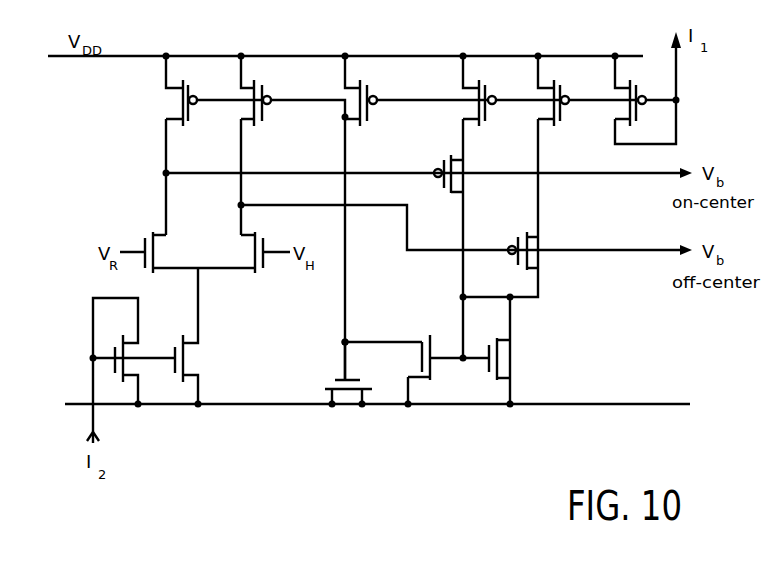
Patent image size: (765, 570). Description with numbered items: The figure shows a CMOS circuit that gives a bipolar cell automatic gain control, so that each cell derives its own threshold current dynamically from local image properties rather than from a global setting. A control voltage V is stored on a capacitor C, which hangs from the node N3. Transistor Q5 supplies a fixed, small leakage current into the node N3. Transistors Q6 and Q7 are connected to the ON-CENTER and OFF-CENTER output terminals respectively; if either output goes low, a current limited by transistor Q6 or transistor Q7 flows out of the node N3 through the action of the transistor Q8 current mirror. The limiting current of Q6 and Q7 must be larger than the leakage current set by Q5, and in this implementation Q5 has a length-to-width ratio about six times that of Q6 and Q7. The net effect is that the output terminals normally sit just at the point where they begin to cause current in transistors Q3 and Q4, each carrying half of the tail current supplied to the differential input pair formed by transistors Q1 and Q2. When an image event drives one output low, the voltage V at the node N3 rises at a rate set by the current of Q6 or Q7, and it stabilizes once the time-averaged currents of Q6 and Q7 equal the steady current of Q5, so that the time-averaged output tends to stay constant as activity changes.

The transistor Q1 is at (159, 253).
The transistor Q2 is at (244, 253).
The transistor Q3 is at (191, 91).
The transistor Q4 is at (267, 91).
The transistor Q5 is at (373, 91).
The transistor Q6 is at (489, 91).
The transistor Q7 is at (565, 91).
The transistor current mirror Q8 is at (448, 369).
The node N3 is at (342, 340).
The control voltage V is at (383, 326).
The capacitor C is at (342, 373).